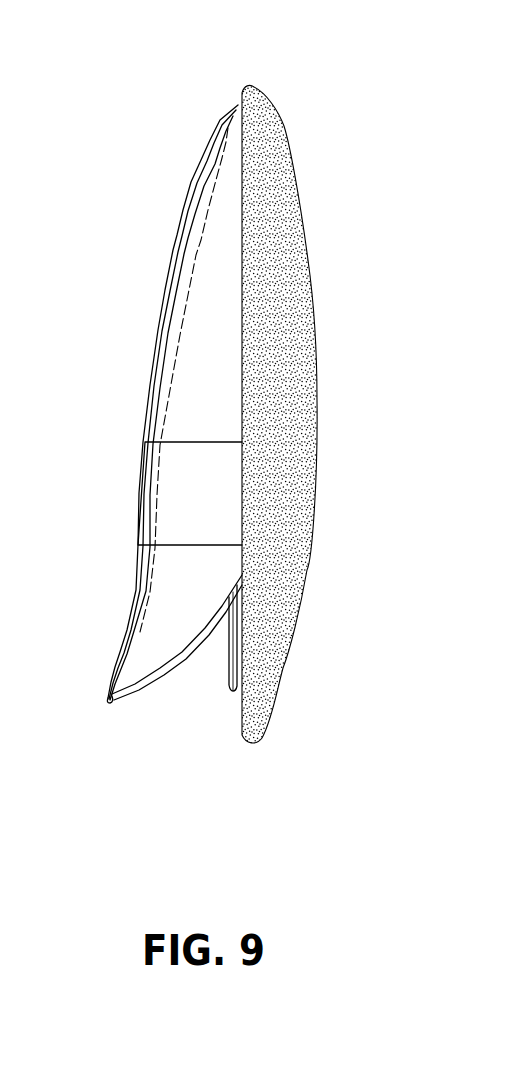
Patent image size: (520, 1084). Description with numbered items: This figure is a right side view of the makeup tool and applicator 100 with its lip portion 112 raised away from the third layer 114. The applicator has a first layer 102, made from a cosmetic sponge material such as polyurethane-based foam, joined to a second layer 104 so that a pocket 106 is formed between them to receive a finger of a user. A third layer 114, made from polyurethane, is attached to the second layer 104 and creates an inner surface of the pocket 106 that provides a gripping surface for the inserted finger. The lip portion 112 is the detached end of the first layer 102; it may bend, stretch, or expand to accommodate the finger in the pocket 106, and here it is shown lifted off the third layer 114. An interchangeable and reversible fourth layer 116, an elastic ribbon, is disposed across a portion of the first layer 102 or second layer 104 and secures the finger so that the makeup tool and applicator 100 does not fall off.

The makeup tool and applicator 100 is at (408, 92).
The first layer 102 is at (167, 345).
The second layer 104 is at (282, 665).
The pocket 106 is at (197, 681).
The lip portion 112 is at (121, 668).
The third layer 114 is at (233, 690).
The fourth layer 116 is at (152, 467).